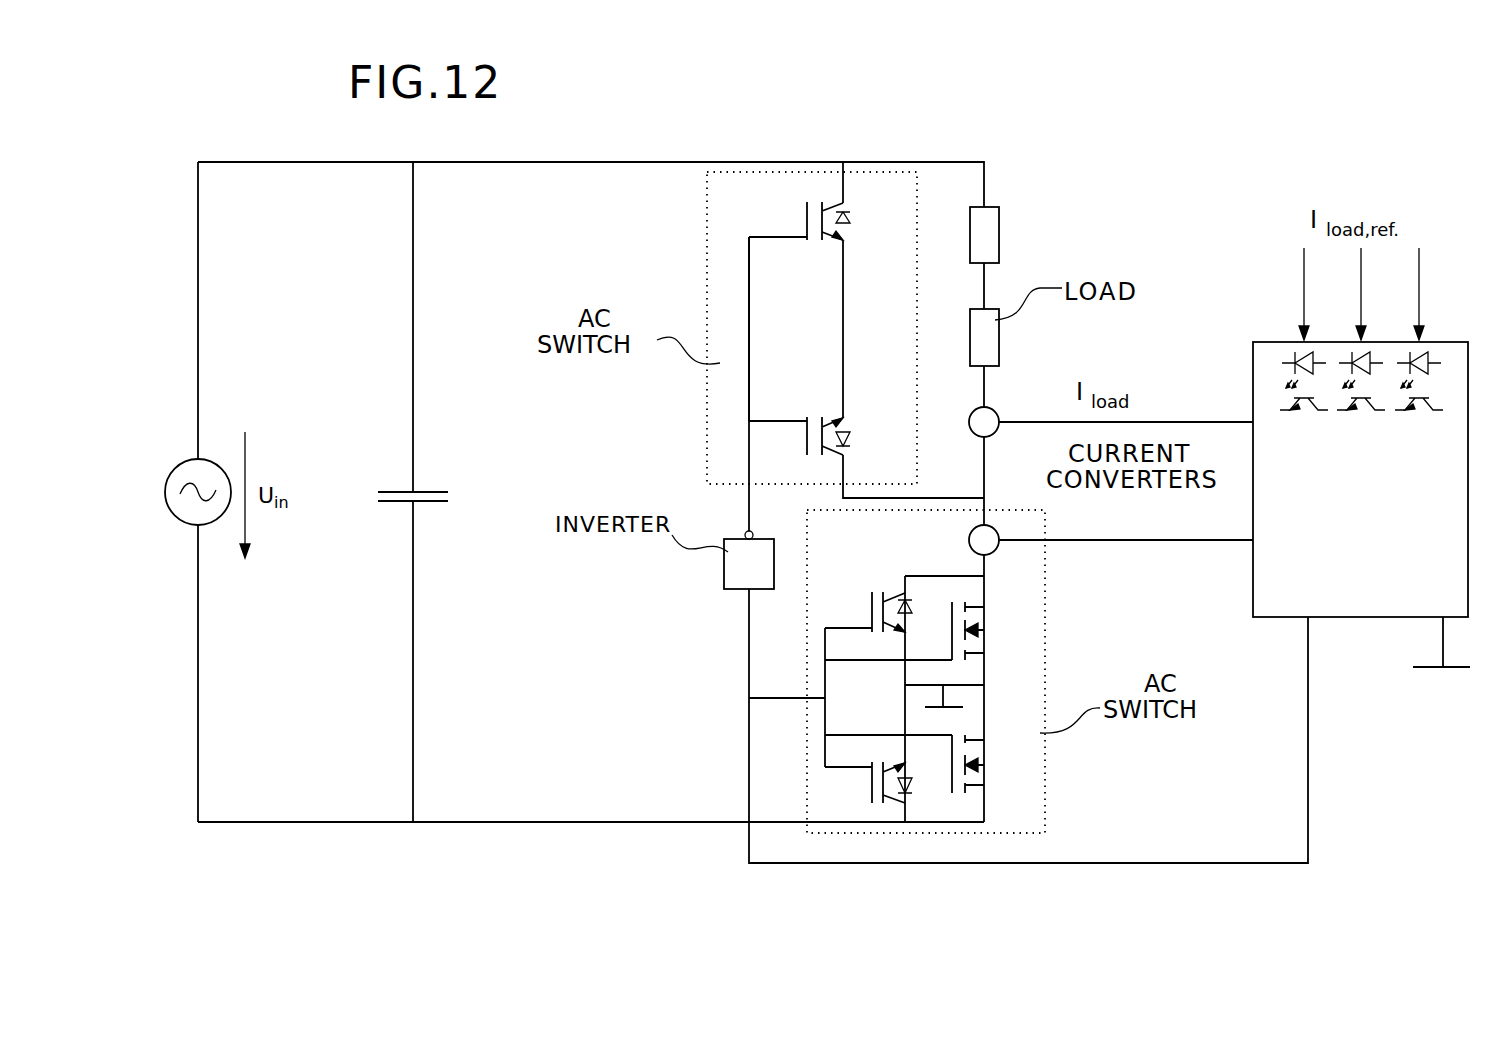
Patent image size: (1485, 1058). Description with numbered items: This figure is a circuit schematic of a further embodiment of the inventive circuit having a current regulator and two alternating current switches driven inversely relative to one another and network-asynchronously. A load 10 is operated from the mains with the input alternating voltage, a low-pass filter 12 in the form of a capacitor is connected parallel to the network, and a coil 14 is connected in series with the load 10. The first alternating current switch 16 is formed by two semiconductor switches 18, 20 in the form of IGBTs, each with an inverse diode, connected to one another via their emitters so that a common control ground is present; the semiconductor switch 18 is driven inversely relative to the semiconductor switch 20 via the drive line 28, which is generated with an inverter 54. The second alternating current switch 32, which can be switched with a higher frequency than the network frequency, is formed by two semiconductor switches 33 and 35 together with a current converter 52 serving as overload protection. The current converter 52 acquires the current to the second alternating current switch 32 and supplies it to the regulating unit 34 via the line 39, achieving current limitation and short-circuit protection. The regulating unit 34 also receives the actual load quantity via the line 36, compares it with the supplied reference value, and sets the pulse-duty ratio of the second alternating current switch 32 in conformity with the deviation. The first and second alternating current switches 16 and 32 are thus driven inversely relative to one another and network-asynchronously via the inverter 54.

The load 10 is at (1004, 337).
The low-pass filter 12 is at (432, 492).
The coil 14 is at (1004, 235).
The first alternating current switch 16 is at (718, 201).
The semiconductor switch 18 is at (799, 306).
The semiconductor switch 20 is at (799, 420).
The drive line 28 is at (732, 328).
The second alternating current switch 32 is at (1044, 822).
The semiconductor switch 33 is at (987, 631).
The regulating unit 34 is at (1360, 479).
The semiconductor switch 35 is at (987, 764).
The line 36 is at (1201, 407).
The line 39 is at (1201, 525).
The current converter 52 is at (1040, 472).
The inverter 54 is at (749, 560).